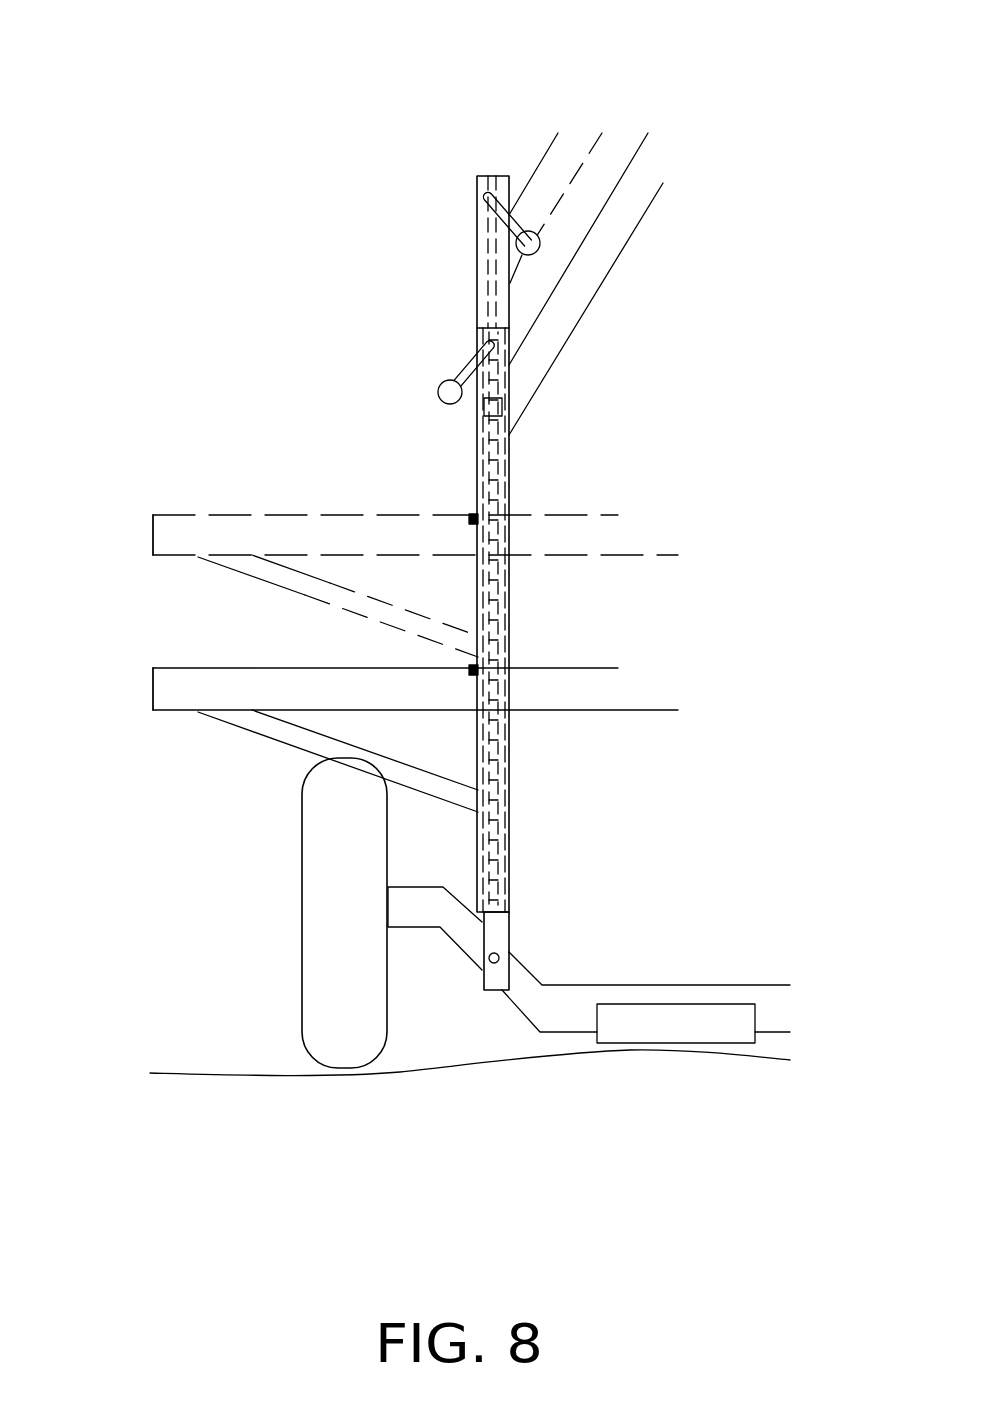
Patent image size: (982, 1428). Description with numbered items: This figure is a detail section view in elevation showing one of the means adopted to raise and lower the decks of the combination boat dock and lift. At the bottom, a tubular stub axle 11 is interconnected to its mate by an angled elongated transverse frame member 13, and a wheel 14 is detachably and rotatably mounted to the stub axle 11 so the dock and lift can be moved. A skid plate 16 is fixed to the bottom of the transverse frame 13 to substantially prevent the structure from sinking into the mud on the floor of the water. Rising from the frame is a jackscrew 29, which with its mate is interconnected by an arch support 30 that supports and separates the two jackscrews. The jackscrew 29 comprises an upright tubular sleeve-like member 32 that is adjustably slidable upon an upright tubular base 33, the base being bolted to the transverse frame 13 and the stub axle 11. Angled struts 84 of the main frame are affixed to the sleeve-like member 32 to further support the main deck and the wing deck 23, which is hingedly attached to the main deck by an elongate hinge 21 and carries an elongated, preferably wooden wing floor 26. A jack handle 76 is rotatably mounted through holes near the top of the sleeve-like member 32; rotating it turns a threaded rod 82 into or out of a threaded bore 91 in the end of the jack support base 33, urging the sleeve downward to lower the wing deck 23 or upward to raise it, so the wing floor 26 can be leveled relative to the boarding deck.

The tubular stub axle 11 is at (410, 900).
The transverse frame member 13 is at (470, 1076).
The wheel 14 is at (308, 895).
The skid plate 16 is at (676, 1025).
The elongate hinge 21 is at (467, 672).
The wing deck 23 is at (153, 540).
The wing floor 26 is at (212, 517).
The jackscrew 29 is at (455, 318).
The arch support 30 is at (538, 160).
The tubular sleeve-like member 32 is at (510, 453).
The tubular base 33 is at (502, 942).
The jack handle 76 is at (438, 390).
The threaded rod 82 is at (517, 390).
The angled strut 84 is at (250, 576).
The threaded bore 91 is at (475, 408).